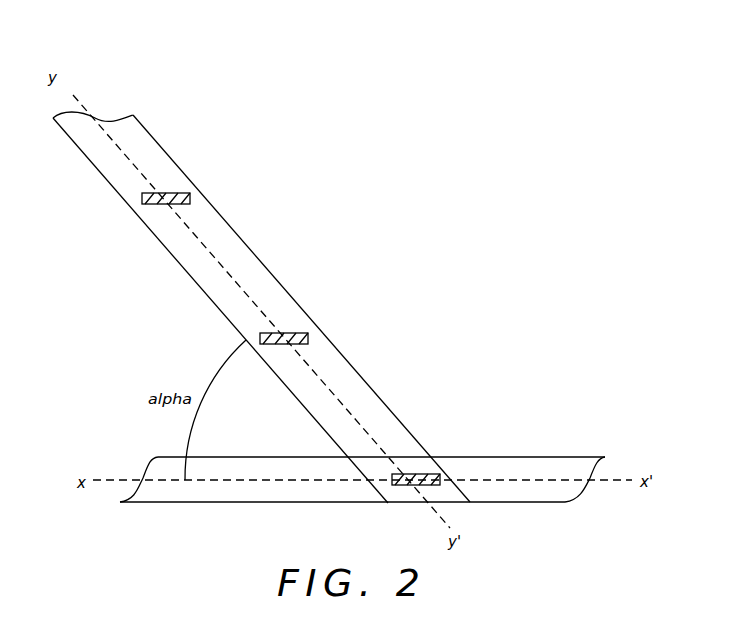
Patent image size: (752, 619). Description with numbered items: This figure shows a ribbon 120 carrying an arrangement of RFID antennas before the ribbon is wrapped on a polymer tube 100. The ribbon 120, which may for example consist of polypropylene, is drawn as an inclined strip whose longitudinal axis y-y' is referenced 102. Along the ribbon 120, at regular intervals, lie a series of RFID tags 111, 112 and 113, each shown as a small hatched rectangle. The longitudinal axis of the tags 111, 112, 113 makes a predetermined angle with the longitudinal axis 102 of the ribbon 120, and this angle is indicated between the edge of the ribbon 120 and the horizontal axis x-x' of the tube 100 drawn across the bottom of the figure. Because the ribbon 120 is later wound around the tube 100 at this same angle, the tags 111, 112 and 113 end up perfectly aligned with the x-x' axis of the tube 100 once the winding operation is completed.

The tube 100 is at (105, 483).
The longitudinal axis y-y' of the ribbon 102 is at (70, 92).
The RFID tag 111 is at (422, 474).
The RFID tag 112 is at (299, 333).
The RFID tag 113 is at (142, 197).
The ribbon 120 is at (367, 383).